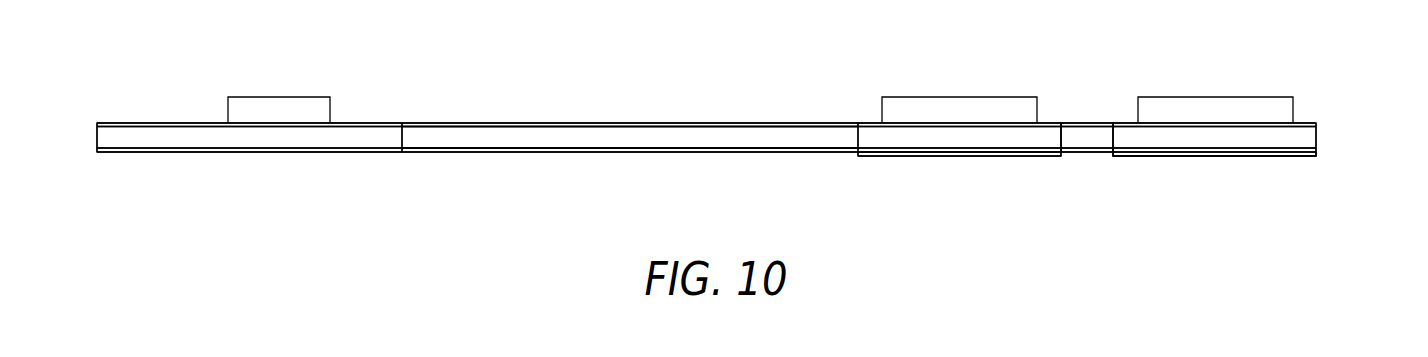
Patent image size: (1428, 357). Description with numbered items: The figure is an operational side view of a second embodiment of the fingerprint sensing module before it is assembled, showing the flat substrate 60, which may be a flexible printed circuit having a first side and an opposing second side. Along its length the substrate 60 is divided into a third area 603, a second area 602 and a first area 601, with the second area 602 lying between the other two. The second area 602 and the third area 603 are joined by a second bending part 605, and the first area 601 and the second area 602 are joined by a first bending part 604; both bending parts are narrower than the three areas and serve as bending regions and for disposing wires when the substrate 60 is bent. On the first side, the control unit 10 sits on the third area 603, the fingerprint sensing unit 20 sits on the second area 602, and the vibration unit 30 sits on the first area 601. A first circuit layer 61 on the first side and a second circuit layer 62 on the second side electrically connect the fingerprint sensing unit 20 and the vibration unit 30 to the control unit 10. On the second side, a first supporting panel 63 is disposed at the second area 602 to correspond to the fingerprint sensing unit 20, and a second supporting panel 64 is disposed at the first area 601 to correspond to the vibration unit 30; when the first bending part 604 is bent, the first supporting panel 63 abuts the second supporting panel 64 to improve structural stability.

The control unit 10 is at (279, 108).
The fingerprint sensing unit 20 is at (962, 108).
The vibration unit 30 is at (1214, 108).
The substrate 60 is at (676, 94).
The first circuit layer 61 is at (467, 125).
The second circuit layer 62 is at (478, 150).
The first supporting panel 63 is at (990, 156).
The second supporting panel 64 is at (1222, 156).
The first area 601 is at (1312, 137).
The second area 602 is at (908, 137).
The third area 603 is at (253, 137).
The first bending part 604 is at (1093, 137).
The second bending part 605 is at (612, 137).